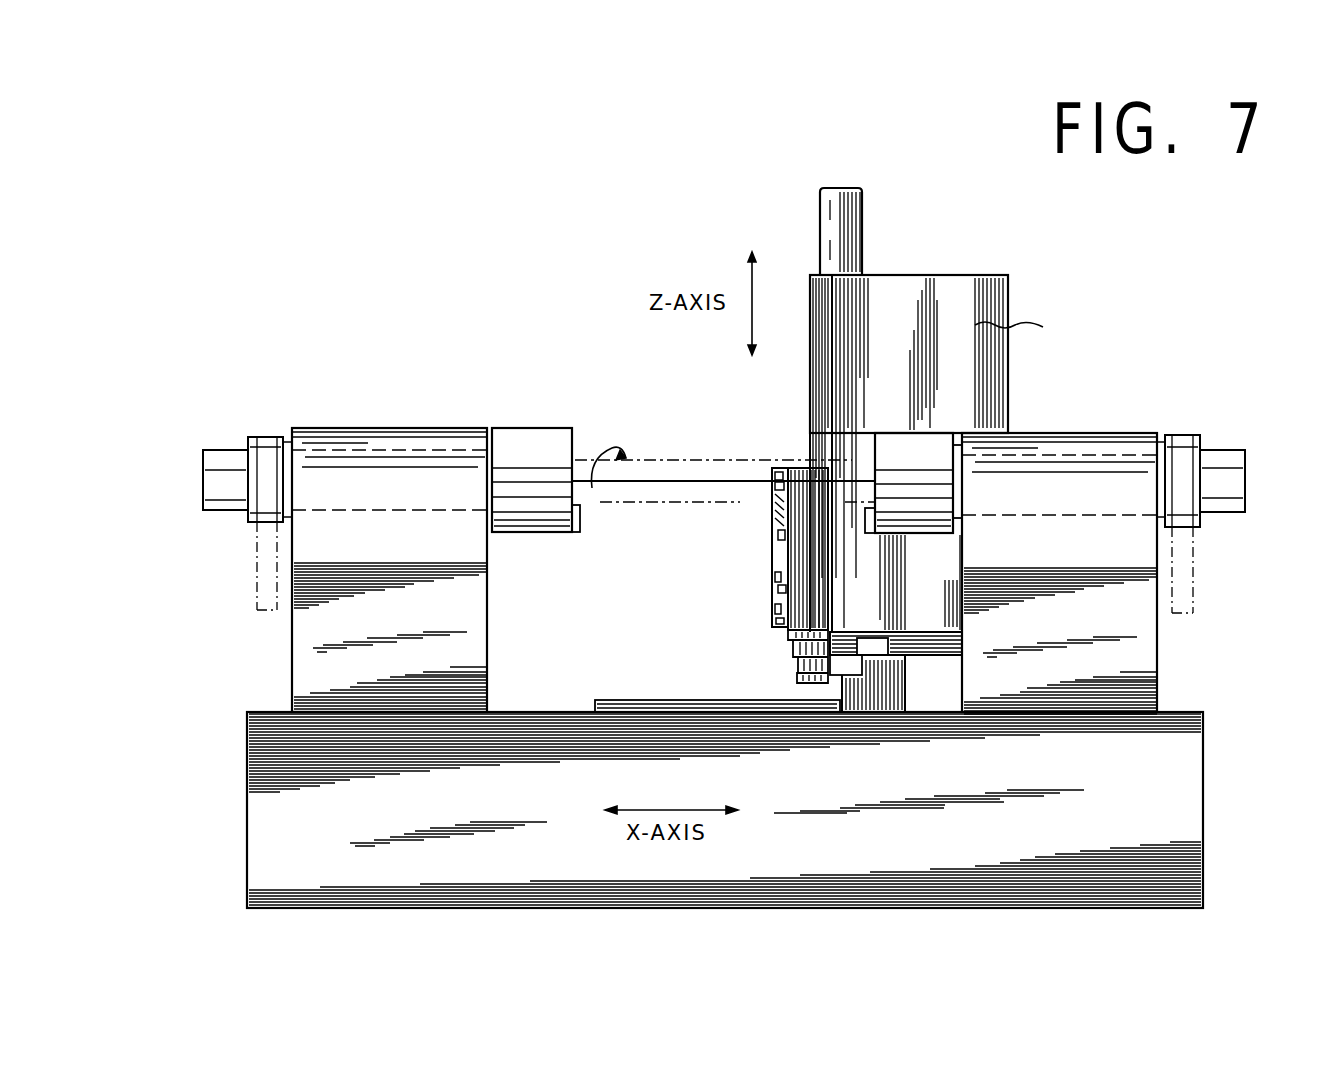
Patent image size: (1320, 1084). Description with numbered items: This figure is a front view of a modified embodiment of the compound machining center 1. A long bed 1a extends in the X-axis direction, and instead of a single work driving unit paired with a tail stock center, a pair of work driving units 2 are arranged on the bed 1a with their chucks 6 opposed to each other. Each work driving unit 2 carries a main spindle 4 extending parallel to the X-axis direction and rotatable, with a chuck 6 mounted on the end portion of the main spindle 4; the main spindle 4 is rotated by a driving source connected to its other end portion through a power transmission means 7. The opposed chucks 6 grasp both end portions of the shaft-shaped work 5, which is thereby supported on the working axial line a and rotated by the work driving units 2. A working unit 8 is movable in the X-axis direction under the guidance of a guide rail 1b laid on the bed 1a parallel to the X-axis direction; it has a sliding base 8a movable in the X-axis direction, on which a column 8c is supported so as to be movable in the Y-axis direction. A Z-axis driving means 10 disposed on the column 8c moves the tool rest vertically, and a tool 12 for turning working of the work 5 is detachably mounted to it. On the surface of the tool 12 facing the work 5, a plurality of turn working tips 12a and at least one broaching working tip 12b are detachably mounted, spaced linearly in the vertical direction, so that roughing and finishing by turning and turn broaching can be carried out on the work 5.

The compound machining center 1 is at (238, 752).
The bed 1a is at (934, 880).
The guide rail 1b is at (633, 704).
The work driving unit 2 is at (460, 430).
The main spindle 4 is at (379, 470).
The work 5 is at (683, 500).
The chuck 6 is at (541, 514).
The power transmission means 7 is at (262, 588).
The working unit 8 is at (958, 276).
The sliding base 8a is at (884, 698).
The column 8c is at (1020, 315).
The Z-axis driving means 10 is at (845, 202).
The tool 12 is at (790, 563).
The turn working tips 12a is at (778, 590).
The broaching working tip 12b is at (776, 508).
The working axial line a is at (720, 480).